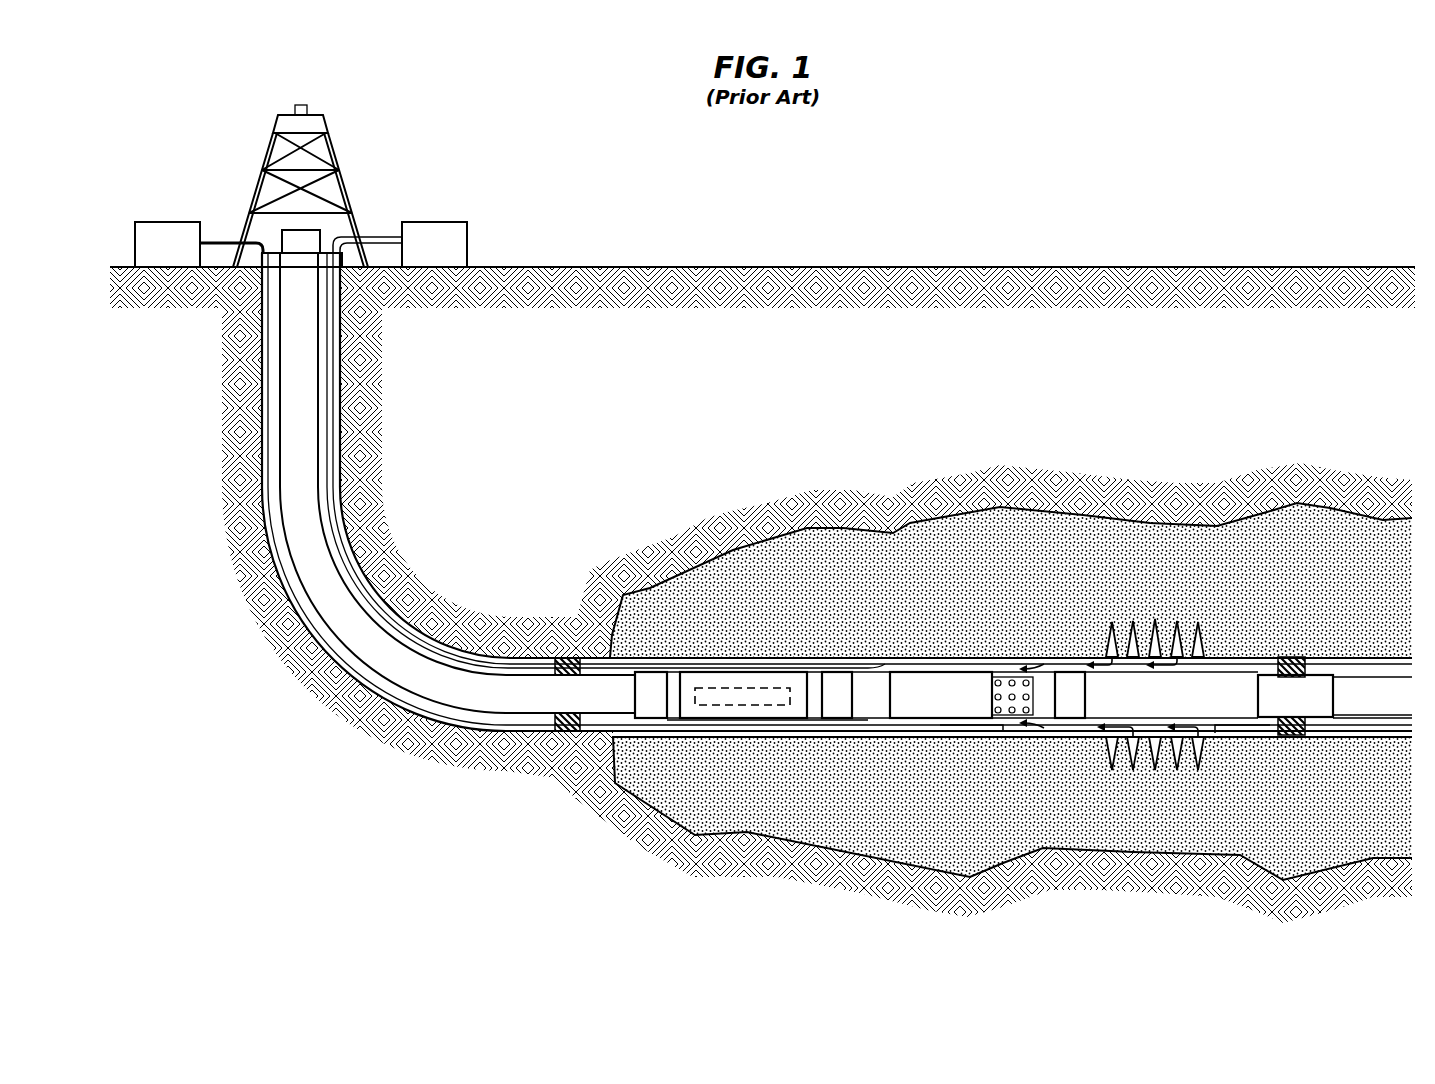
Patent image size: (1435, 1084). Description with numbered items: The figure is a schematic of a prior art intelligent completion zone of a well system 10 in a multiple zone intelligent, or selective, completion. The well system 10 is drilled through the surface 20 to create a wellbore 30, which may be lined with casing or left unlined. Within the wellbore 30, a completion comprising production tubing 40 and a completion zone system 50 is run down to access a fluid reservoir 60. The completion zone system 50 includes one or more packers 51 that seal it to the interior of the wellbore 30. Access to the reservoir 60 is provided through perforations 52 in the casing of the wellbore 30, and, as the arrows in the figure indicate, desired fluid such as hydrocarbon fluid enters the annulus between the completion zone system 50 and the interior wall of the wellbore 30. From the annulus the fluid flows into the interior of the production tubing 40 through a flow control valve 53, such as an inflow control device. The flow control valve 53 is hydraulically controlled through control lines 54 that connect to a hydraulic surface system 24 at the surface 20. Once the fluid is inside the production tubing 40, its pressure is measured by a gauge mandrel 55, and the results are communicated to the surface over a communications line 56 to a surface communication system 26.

The well system 10 is at (396, 182).
The surface 20 is at (995, 268).
The hydraulic surface system 24 is at (451, 254).
The surface communication system 26 is at (181, 254).
The wellbore 30 is at (266, 380).
The production tubing 40 is at (311, 457).
The completion zone system 50 is at (965, 660).
The packer 51 is at (566, 657).
The perforations 52 is at (1177, 621).
The flow control valve 53 is at (956, 709).
The control line 54 is at (870, 669).
The gauge mandrel 55 is at (745, 706).
The communications line 56 is at (941, 733).
The fluid reservoir 60 is at (1176, 826).